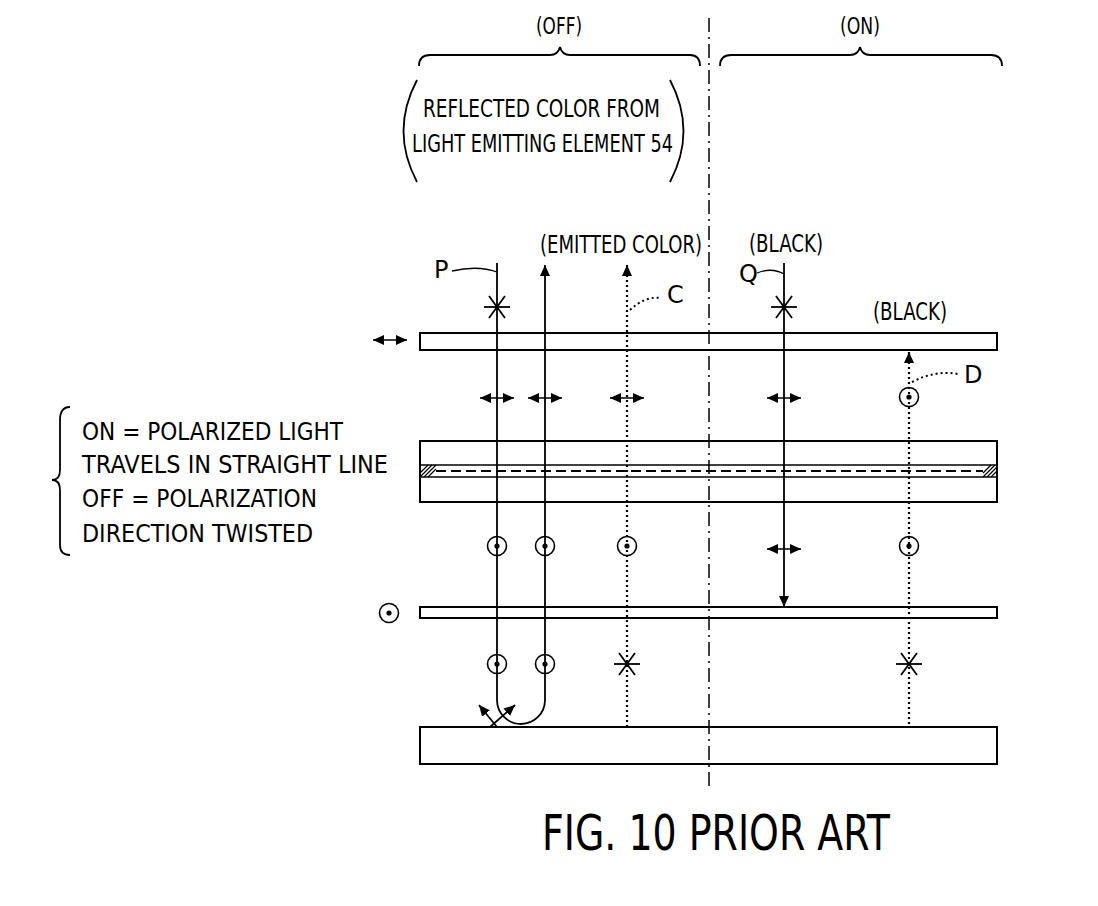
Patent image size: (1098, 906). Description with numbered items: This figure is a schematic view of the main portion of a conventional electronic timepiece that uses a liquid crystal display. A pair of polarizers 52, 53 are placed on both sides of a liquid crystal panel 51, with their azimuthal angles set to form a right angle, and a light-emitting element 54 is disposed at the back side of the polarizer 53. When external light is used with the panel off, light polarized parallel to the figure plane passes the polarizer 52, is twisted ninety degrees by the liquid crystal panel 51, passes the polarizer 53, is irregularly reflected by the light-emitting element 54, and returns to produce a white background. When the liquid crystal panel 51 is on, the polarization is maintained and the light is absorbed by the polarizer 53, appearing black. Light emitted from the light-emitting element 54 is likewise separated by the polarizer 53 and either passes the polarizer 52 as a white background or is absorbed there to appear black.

The liquid crystal panel 51 is at (1018, 428).
The polarizer 52 is at (970, 333).
The polarizer 53 is at (965, 607).
The light-emitting element 54 is at (997, 750).